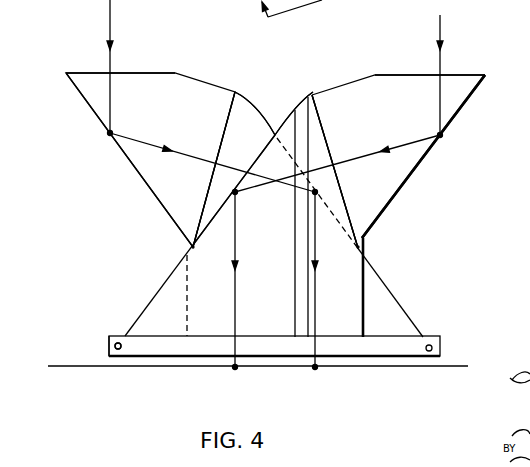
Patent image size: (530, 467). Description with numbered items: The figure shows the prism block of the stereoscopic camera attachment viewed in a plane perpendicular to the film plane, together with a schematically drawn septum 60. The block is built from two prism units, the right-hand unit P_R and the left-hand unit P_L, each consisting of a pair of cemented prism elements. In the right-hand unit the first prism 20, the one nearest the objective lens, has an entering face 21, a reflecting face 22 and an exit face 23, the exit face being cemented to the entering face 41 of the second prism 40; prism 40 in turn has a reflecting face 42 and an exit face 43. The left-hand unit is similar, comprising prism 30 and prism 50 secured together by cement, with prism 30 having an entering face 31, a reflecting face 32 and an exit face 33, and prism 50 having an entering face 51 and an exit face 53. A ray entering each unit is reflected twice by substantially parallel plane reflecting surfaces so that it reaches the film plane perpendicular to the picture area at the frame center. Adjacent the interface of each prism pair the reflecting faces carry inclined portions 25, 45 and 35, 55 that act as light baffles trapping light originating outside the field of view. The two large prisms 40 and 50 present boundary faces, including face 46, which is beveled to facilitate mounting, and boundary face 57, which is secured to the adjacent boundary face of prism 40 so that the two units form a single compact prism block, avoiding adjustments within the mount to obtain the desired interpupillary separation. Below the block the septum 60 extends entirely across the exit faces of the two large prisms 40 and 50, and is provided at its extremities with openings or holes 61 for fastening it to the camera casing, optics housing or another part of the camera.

The first prism 20 is at (479, 97).
The entering face 21 is at (410, 75).
The reflecting face 22 is at (409, 178).
The exit face 23 is at (320, 117).
The inclined portion 25 is at (365, 238).
The prism 30 is at (136, 185).
The entering face 31 is at (150, 73).
The reflecting face 32 is at (88, 103).
The exit face 33 is at (229, 115).
The inclined portion 35 is at (192, 243).
The second prism 40 is at (153, 285).
The entering face 41 is at (345, 207).
The reflecting face 42 is at (206, 228).
The exit face 43 is at (220, 336).
The inclined portion 45 is at (312, 94).
The boundary face 46 is at (272, 292).
The prism 50 is at (398, 285).
The entering face 51 is at (207, 212).
The exit face 53 is at (395, 336).
The inclined portion 55 is at (248, 92).
The boundary face 57 is at (250, 144).
The septum 60 is at (451, 335).
The openings or holes 61 is at (109, 347).